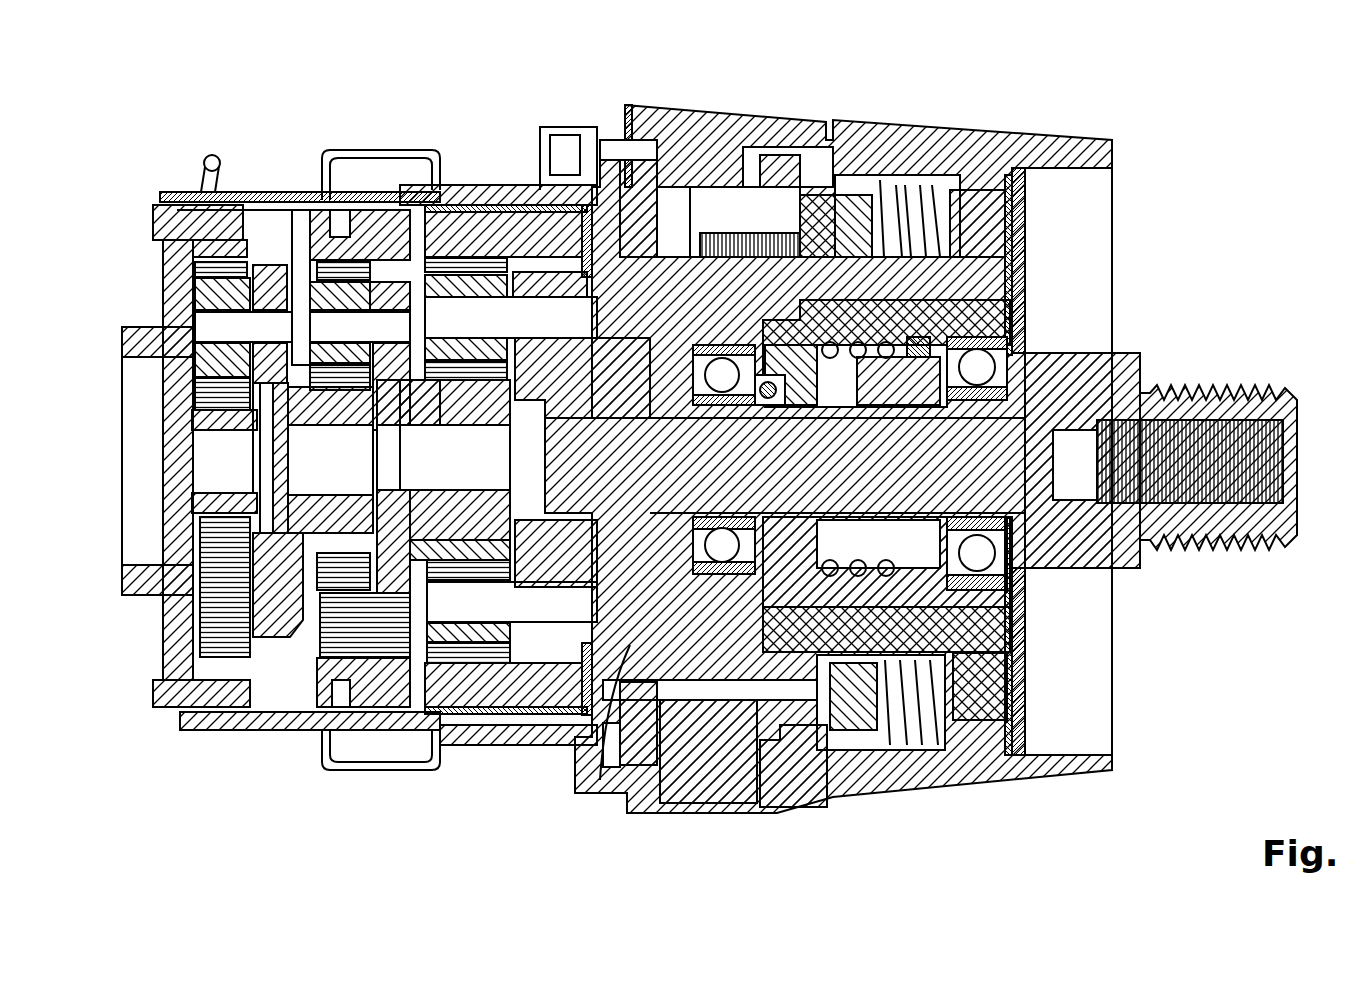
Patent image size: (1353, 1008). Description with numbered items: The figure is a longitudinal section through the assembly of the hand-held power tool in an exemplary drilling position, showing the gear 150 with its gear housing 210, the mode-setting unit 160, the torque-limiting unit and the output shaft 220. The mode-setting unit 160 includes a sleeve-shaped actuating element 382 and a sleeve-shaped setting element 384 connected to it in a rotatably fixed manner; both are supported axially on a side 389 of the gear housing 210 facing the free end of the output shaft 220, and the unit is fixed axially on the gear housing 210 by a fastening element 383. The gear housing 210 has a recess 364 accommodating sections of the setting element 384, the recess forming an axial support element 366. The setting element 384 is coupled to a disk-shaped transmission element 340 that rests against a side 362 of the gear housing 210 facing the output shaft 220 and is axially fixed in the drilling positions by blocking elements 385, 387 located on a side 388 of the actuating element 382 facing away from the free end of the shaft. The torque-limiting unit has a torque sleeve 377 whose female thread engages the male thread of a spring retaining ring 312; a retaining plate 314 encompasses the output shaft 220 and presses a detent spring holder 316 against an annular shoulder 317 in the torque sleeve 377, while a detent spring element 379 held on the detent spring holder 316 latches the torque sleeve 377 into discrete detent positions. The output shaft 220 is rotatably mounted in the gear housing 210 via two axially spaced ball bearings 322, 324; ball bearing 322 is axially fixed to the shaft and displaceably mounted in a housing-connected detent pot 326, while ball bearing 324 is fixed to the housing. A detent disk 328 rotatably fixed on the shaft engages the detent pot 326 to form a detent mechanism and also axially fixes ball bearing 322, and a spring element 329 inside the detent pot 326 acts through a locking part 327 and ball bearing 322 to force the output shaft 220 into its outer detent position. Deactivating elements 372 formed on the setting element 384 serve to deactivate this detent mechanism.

The gear 150 is at (281, 442).
The mode-setting unit 160 is at (748, 130).
The gear housing 210 is at (484, 195).
The output shaft 220 is at (1235, 385).
The spring retaining ring 312 is at (876, 135).
The retaining plate 314 is at (1027, 200).
The detent spring holder 316 is at (1027, 228).
The annular shoulder 317 is at (918, 140).
The ball bearing 322 is at (1027, 322).
The ball bearing 324 is at (630, 648).
The detent pot 326 is at (1030, 600).
The locking part 327 is at (1030, 305).
The detent disk 328 is at (1060, 365).
The spring element 329 is at (1030, 625).
The transmission element 340 is at (630, 722).
The side of gear housing 362 is at (673, 707).
The recess 364 is at (745, 712).
The axial support element 366 is at (837, 773).
The deactivating element 372 is at (805, 140).
The torque sleeve 377 is at (955, 135).
The detent spring element 379 is at (1030, 135).
The actuating element 382 is at (712, 125).
The fastening element 383 is at (580, 128).
The setting element 384 is at (770, 135).
The blocking element 385 is at (672, 198).
The blocking element 387 is at (717, 708).
The side of actuating element 388 is at (632, 105).
The side of gear housing 389 is at (775, 745).